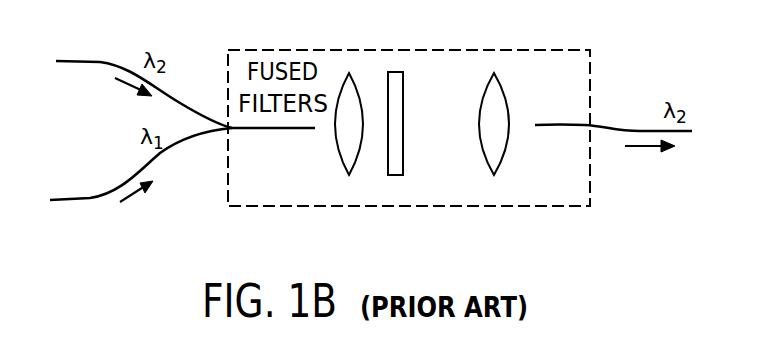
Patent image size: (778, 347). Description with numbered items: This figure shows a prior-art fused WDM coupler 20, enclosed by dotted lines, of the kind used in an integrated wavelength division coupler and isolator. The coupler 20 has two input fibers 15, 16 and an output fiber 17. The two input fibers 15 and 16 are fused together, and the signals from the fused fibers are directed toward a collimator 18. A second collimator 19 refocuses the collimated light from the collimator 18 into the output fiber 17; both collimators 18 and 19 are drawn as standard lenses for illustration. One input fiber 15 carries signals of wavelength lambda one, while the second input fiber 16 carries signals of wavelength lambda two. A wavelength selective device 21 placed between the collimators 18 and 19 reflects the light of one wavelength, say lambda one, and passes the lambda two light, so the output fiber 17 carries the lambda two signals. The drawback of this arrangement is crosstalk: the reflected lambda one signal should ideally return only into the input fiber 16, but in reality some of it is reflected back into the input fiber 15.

The input fiber 15 is at (80, 198).
The input fiber 16 is at (80, 60).
The output fiber 17 is at (619, 125).
The collimator 18 is at (343, 160).
The second collimator 19 is at (495, 88).
The coupler 20 is at (567, 196).
The wavelength selective device 21 is at (397, 95).